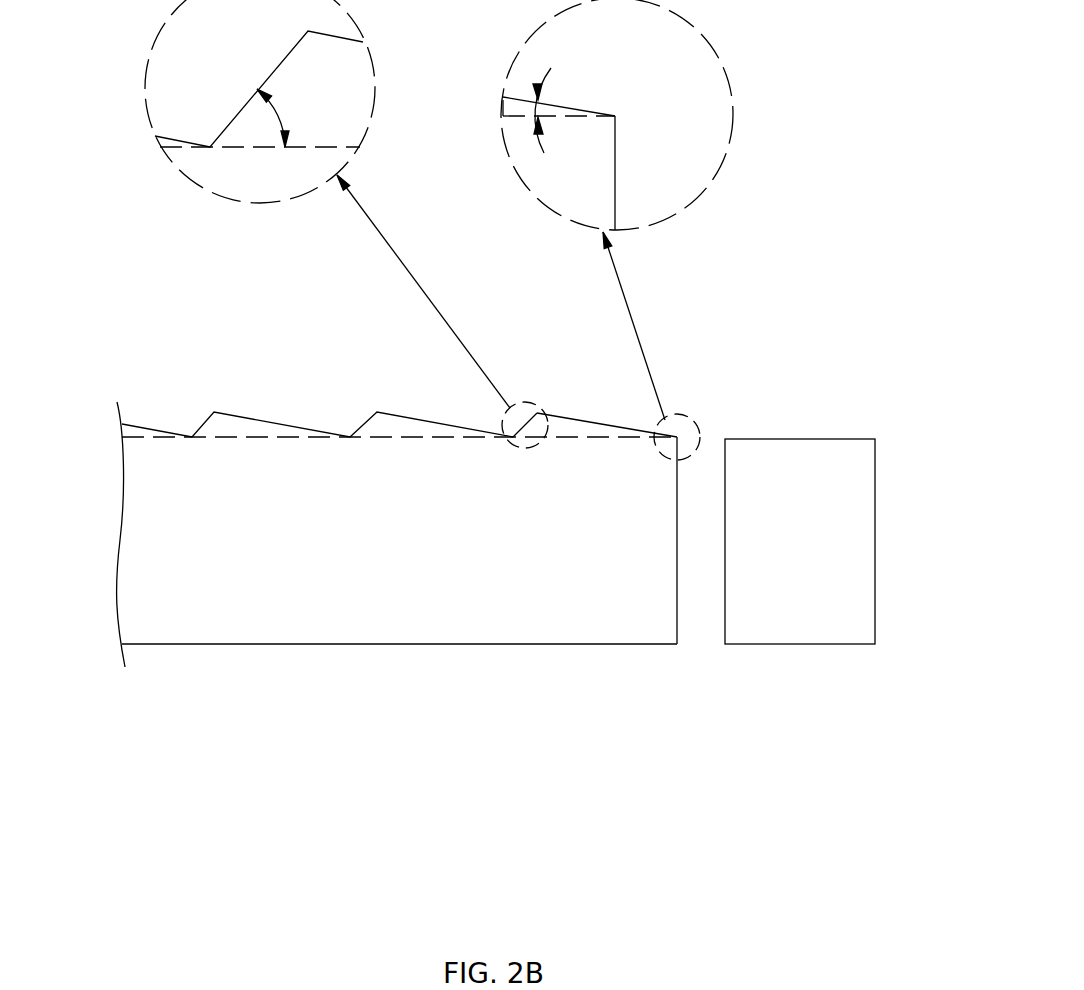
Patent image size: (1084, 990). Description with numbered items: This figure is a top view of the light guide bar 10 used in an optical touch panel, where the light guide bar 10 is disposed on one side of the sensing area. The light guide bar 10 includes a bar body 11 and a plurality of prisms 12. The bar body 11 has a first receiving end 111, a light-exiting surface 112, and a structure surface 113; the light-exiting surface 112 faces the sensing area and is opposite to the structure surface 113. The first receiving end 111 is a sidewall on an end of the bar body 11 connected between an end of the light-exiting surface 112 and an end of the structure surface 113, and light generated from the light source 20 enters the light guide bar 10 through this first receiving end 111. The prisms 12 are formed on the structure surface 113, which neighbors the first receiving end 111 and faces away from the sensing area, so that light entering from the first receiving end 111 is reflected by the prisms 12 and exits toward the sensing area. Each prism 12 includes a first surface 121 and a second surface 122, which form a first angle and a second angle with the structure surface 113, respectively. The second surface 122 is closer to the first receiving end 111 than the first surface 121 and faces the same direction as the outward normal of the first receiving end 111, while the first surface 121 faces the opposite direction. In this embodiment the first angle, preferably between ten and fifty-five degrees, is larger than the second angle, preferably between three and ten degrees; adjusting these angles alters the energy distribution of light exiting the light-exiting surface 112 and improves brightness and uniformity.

The light guide bar 10 is at (423, 517).
The bar body 11 is at (423, 528).
The first receiving end 111 is at (678, 540).
The light-exiting surface 112 is at (540, 643).
The structure surface 113 is at (460, 437).
The prism 12 is at (399, 380).
The first surface 121 is at (528, 424).
The second surface 122 is at (600, 420).
The light source 20 is at (745, 445).